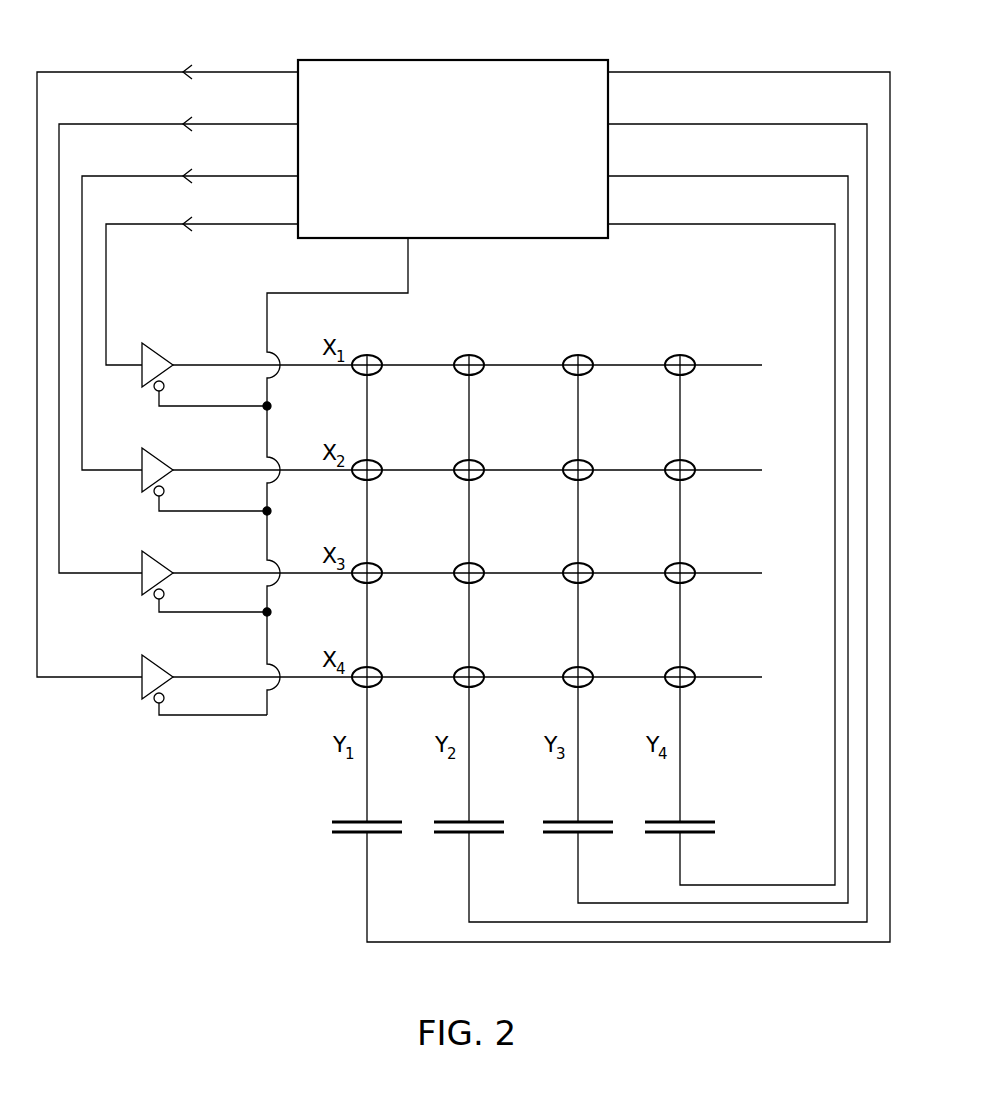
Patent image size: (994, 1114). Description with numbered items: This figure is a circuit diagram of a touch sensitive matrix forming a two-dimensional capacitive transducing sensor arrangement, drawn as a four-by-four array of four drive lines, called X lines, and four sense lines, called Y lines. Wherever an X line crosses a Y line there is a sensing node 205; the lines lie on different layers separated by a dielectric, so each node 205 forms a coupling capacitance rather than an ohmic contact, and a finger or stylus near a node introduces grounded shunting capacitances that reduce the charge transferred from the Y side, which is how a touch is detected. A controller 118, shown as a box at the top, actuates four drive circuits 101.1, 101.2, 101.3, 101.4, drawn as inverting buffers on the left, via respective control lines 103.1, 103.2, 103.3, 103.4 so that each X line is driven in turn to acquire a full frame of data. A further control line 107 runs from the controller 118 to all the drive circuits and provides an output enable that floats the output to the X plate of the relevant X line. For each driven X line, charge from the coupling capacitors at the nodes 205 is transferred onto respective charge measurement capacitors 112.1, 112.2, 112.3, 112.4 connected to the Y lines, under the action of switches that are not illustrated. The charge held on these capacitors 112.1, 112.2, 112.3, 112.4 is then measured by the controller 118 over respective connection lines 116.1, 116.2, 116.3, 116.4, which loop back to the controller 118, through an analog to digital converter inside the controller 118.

The controller 118 is at (506, 58).
The control line 107 is at (408, 265).
The control line 103.1 is at (77, 73).
The control line 103.2 is at (97, 125).
The control line 103.3 is at (113, 177).
The control line 103.4 is at (135, 225).
The drive circuit 101.1 is at (172, 333).
The drive circuit 101.2 is at (172, 438).
The drive circuit 101.3 is at (172, 541).
The drive circuit 101.4 is at (172, 645).
The sensing node 205 is at (397, 338).
The charge measurement capacitor 112.1 is at (340, 820).
The charge measurement capacitor 112.2 is at (442, 820).
The charge measurement capacitor 112.3 is at (551, 820).
The charge measurement capacitor 112.4 is at (653, 820).
The connection line 116.1 is at (365, 882).
The connection line 116.2 is at (467, 882).
The connection line 116.3 is at (576, 882).
The connection line 116.4 is at (678, 882).